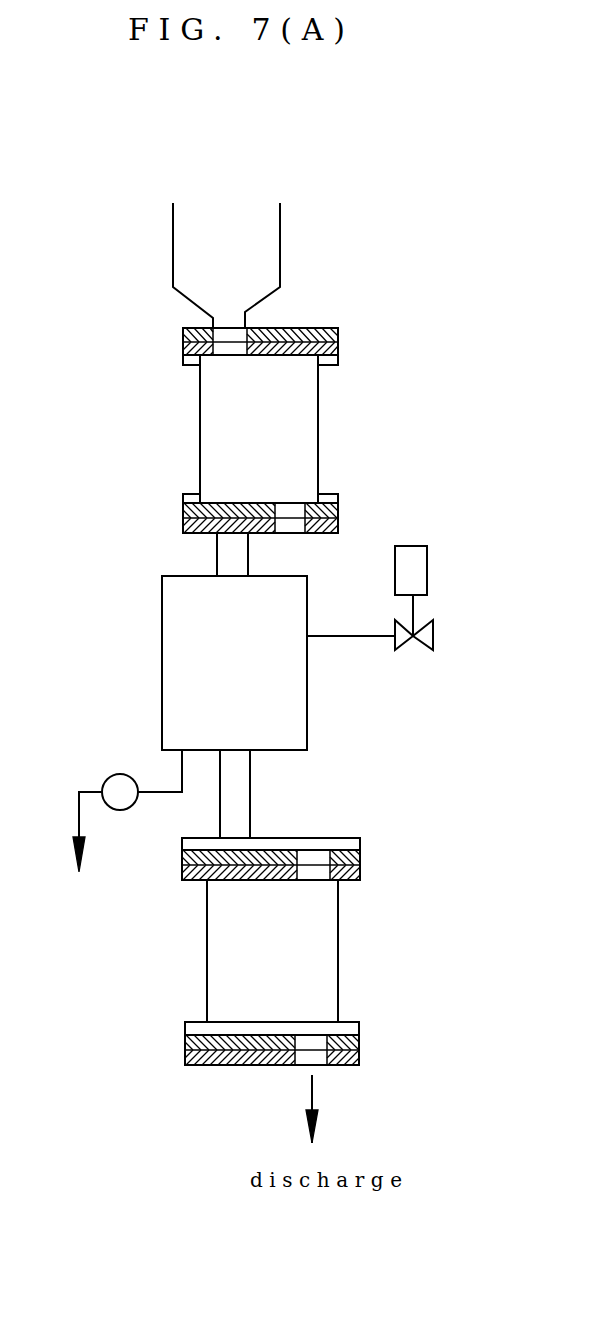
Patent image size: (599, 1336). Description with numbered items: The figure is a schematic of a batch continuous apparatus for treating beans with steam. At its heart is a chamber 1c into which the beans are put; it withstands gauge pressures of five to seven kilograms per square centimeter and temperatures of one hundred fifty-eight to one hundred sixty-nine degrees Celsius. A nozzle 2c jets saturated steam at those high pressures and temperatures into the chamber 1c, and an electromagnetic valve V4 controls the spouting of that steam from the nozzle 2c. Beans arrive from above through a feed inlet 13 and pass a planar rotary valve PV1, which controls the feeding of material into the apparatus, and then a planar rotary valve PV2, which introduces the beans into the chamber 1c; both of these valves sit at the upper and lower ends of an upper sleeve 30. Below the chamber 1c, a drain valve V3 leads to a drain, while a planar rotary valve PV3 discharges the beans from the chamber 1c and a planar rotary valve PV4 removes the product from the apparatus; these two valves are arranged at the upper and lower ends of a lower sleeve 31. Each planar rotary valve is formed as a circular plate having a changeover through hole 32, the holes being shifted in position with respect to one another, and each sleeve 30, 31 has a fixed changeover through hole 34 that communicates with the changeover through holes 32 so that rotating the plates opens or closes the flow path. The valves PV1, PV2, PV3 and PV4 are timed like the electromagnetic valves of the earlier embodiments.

The feed hopper inlet 13 is at (280, 243).
The planar rotary valve PV1 is at (294, 352).
The sleeve 30 is at (222, 422).
The planar rotary valve PV2 is at (182, 513).
The chamber 1c is at (162, 655).
The nozzle 2c is at (350, 636).
The electromagnetic valve V4 is at (425, 650).
The drain valve V3 is at (115, 778).
The planar rotary valve PV3 is at (360, 858).
The sleeve 31 is at (218, 963).
The planar rotary valve PV4 is at (360, 1040).
The changeover through hole 32 is at (228, 350).
The fixed changeover through hole 34 is at (228, 335).